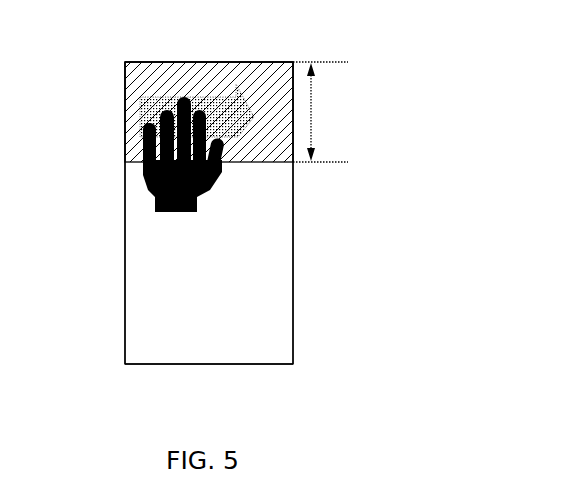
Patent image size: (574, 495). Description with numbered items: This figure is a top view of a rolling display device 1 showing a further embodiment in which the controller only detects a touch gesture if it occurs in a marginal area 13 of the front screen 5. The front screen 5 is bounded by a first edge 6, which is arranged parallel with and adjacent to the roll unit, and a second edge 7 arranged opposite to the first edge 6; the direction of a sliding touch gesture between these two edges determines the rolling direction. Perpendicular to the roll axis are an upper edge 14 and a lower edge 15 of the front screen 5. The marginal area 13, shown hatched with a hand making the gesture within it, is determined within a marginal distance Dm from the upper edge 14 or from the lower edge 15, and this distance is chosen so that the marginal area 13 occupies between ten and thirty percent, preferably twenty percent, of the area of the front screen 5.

The rolling display device 1 is at (85, 93).
The front screen 5 is at (216, 307).
The first edge 6 is at (125, 263).
The second edge 7 is at (293, 263).
The marginal area 13 is at (270, 83).
The upper edge 14 is at (198, 62).
The lower edge 15 is at (190, 364).